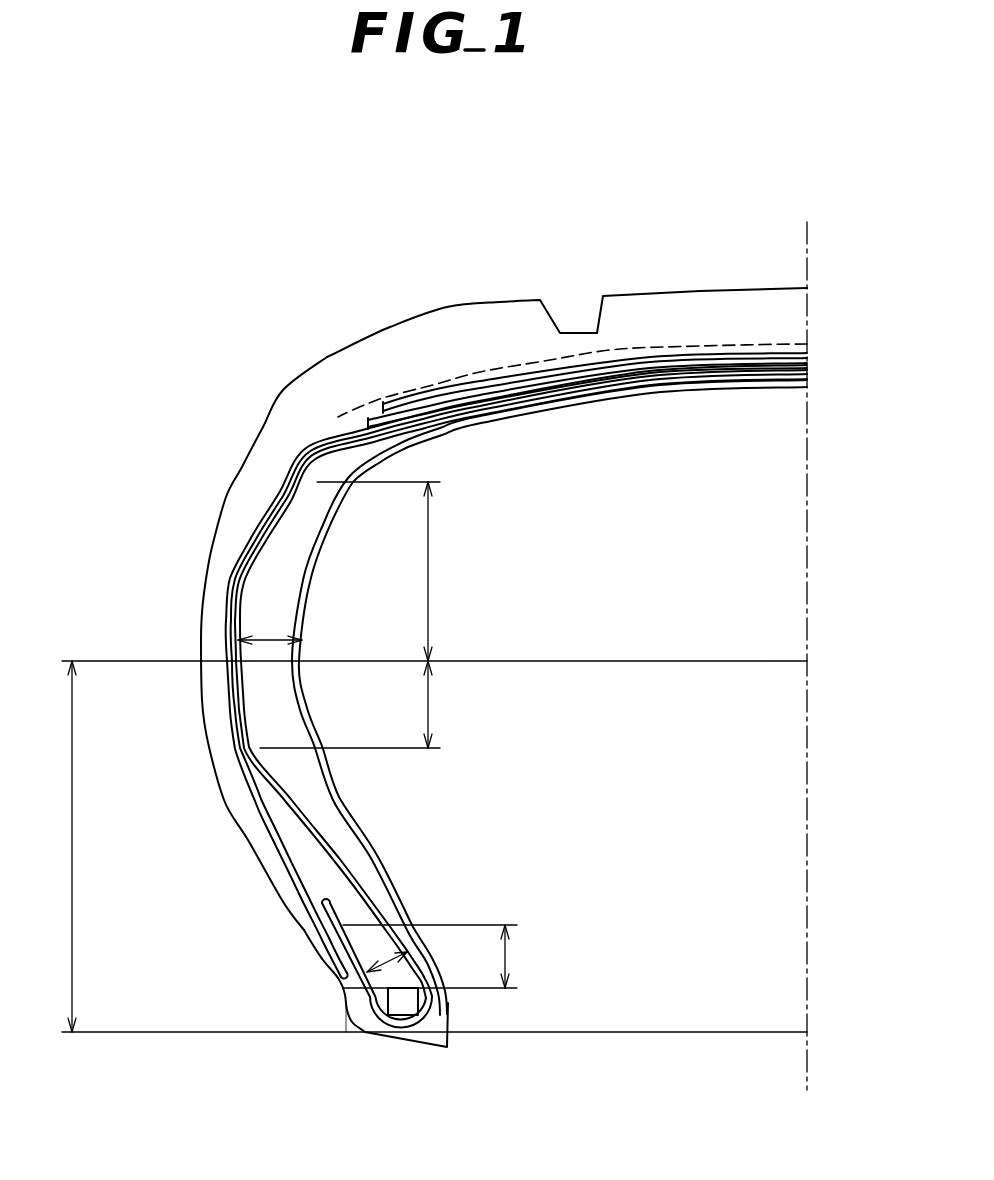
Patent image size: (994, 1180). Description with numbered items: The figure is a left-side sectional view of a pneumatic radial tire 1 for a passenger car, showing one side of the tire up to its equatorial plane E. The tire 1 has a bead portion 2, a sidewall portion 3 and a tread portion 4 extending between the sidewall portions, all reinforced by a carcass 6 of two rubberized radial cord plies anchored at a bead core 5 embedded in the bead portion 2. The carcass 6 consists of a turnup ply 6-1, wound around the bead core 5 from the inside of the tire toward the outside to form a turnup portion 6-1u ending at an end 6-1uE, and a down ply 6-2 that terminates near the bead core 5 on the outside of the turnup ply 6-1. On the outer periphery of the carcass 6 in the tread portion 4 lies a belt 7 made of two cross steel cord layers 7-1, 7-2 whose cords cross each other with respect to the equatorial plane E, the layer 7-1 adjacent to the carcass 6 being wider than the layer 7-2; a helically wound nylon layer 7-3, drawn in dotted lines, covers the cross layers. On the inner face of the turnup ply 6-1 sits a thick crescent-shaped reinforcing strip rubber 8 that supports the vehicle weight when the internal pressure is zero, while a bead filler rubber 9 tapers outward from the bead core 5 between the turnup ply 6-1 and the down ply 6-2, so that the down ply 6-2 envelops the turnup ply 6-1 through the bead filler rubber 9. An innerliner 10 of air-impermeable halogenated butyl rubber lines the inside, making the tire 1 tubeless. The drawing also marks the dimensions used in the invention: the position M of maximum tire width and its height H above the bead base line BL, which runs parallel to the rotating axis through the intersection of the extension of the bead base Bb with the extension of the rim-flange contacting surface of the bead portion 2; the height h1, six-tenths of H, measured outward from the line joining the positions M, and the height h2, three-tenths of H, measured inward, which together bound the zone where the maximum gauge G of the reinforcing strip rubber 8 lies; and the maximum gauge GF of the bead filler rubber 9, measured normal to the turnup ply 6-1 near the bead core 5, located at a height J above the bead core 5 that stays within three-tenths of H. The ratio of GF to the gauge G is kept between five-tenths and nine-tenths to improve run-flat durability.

The pneumatic radial tire 1 is at (332, 246).
The bead portion 2 is at (350, 988).
The sidewall portion 3 is at (235, 643).
The tread portion 4 is at (567, 272).
The bead core 5 is at (399, 1052).
The carcass 6 is at (480, 696).
The turnup ply 6-1 is at (488, 700).
The down ply 6-2 is at (487, 672).
The turnup portion 6-1u is at (324, 965).
The end of turnup portion 6-1uE is at (250, 906).
The belt 7 is at (491, 308).
The first steel cord cross layer 7-1 is at (491, 388).
The second steel cord cross layer 7-2 is at (525, 353).
The helically wound nylon layer 7-3 is at (572, 310).
The reinforcing strip rubber 8 is at (321, 703).
The bead filler rubber 9 is at (402, 856).
The innerliner 10 is at (549, 697).
The equatorial plane E is at (810, 267).
The position of maximum tire width M is at (434, 624).
The bead base line BL is at (434, 1061).
The height of maximum width position H is at (80, 846).
The height h1 is at (392, 571).
The height h2 is at (365, 704).
The maximum gauge of reinforcing strip rubber G is at (298, 602).
The maximum gauge of bead filler rubber GF is at (433, 920).
The maximum height of bead filler gauge position J is at (438, 956).
The bead base Bb is at (470, 1084).